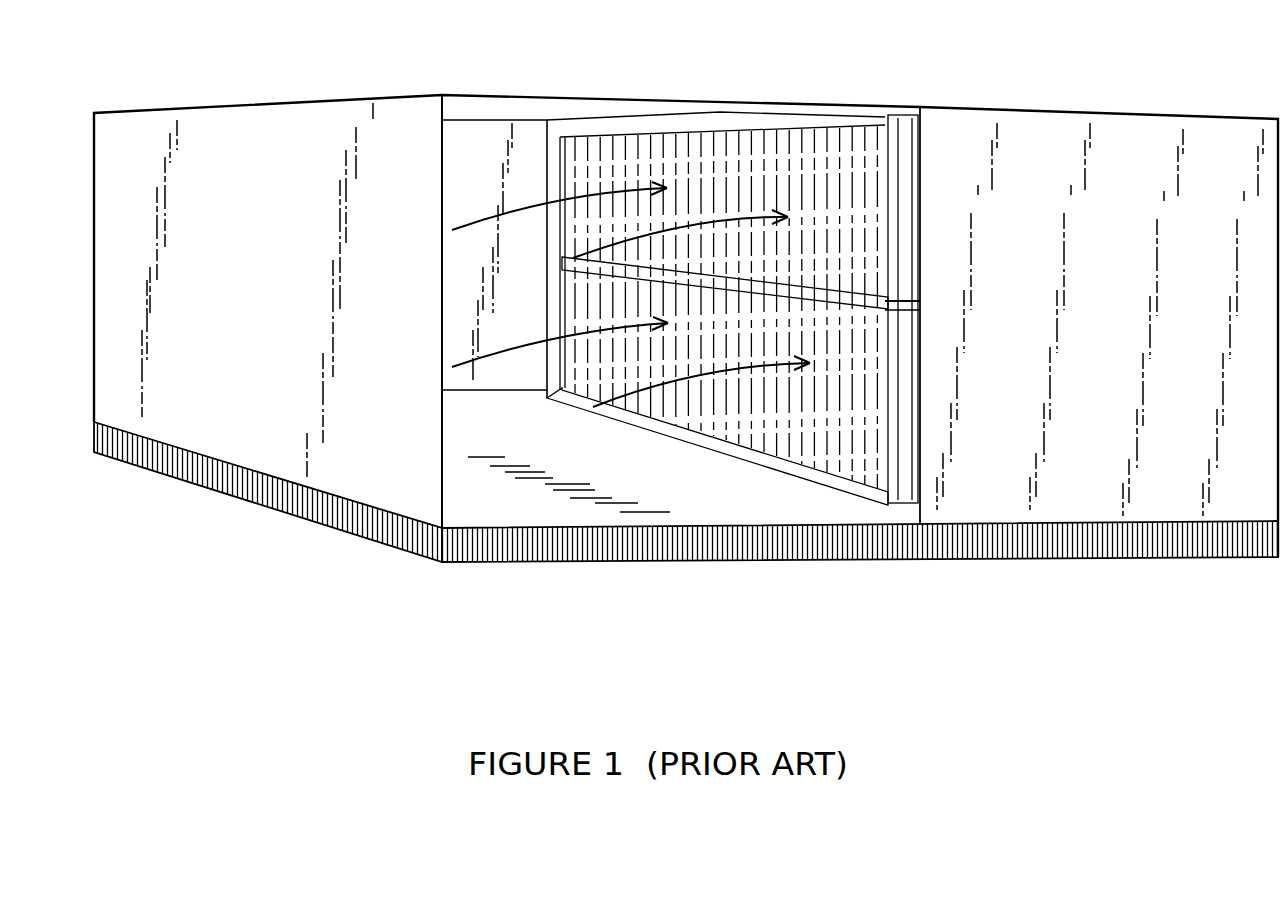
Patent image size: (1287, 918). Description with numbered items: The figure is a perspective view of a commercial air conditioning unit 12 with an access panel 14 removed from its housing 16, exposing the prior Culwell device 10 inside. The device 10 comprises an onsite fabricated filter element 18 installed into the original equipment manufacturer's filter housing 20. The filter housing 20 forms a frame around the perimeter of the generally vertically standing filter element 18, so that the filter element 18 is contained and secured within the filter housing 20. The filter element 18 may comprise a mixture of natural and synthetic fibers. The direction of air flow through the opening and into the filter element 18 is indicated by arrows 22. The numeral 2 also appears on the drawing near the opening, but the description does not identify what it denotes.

The air inlet direction 2 is at (548, 422).
The prior Culwell device 10 is at (624, 428).
The commercial air conditioning unit 12 is at (208, 442).
The access panel 14 is at (479, 132).
The housing 16 is at (956, 121).
The onsite fabricated filter element 18 is at (838, 455).
The filter housing 20 is at (713, 125).
The arrows 22 is at (517, 213).